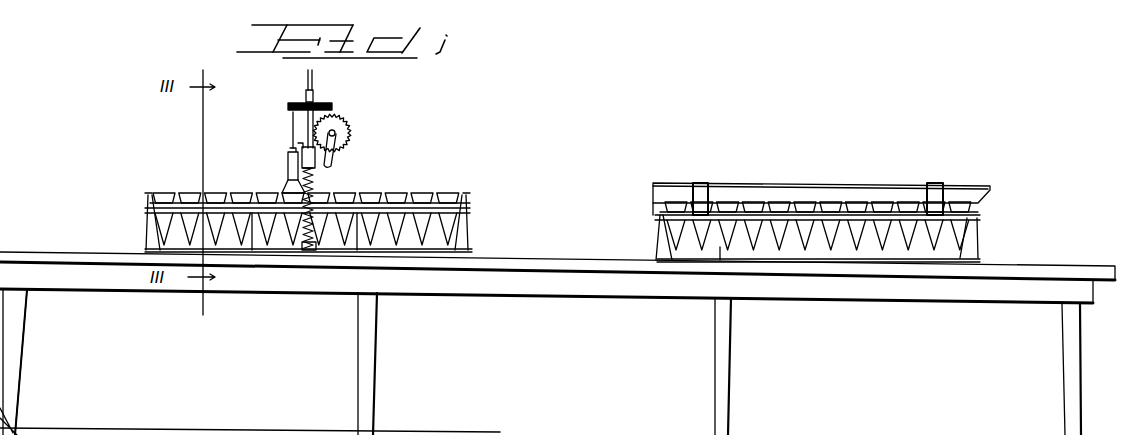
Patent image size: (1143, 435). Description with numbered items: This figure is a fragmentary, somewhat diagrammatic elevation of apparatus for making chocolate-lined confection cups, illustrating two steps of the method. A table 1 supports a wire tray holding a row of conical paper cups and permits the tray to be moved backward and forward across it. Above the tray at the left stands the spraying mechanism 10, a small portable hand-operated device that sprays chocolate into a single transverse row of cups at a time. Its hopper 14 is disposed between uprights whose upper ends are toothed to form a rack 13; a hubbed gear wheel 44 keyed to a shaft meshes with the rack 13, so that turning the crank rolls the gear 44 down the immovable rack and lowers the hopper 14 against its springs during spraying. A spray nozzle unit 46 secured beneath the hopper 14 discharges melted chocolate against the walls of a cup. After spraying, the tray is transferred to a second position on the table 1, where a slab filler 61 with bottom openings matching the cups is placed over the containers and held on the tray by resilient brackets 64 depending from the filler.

The table 1 is at (602, 283).
The spraying mechanism 10 is at (332, 101).
The rack bar 13 is at (307, 128).
The hopper 14 is at (293, 118).
The hubbed gear wheel 44 is at (337, 133).
The spray nozzle unit 46 is at (288, 172).
The slab filler 61 is at (750, 190).
The resilient bracket 64 is at (698, 202).